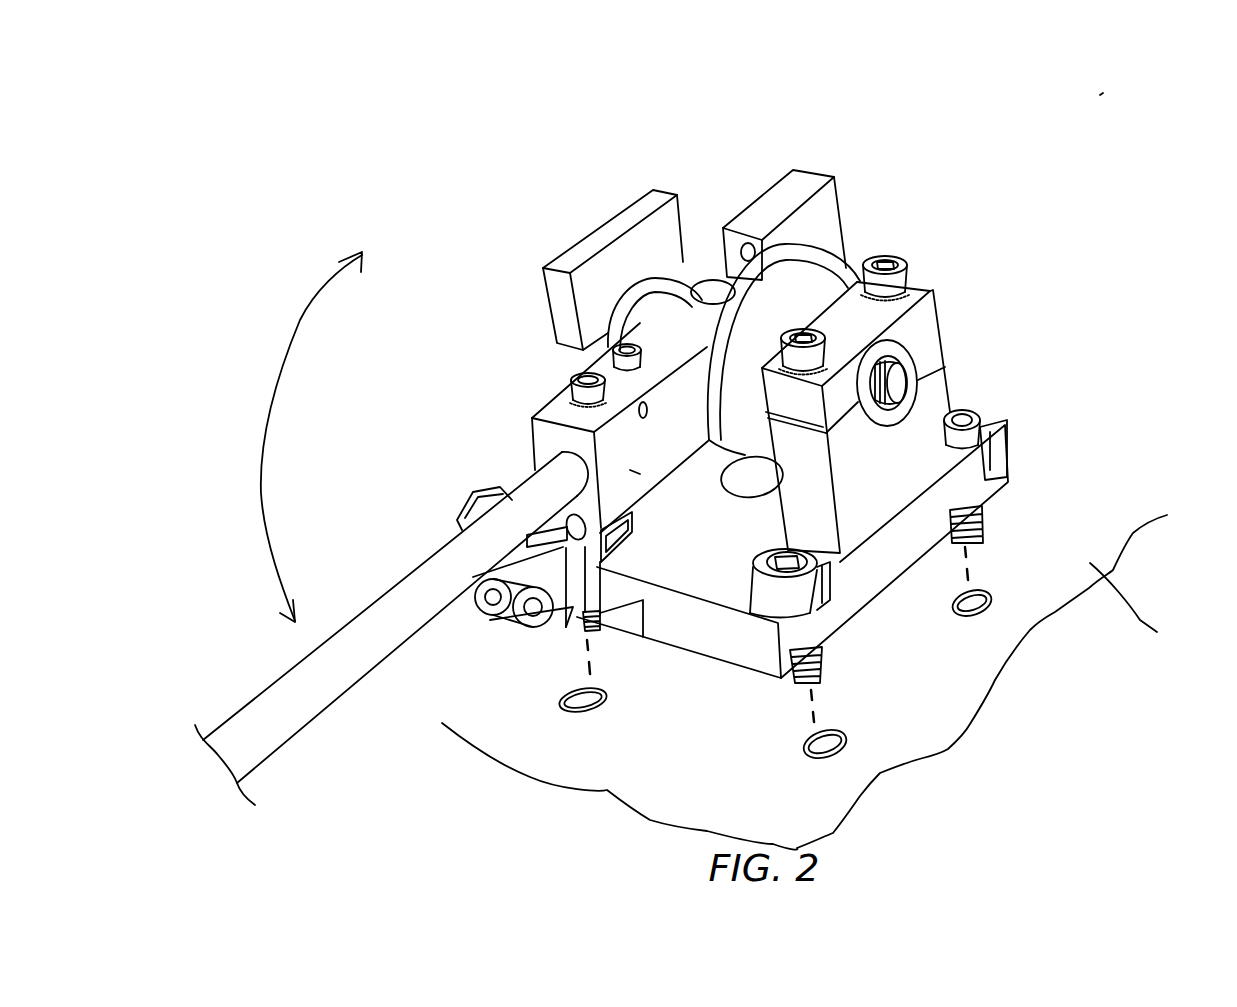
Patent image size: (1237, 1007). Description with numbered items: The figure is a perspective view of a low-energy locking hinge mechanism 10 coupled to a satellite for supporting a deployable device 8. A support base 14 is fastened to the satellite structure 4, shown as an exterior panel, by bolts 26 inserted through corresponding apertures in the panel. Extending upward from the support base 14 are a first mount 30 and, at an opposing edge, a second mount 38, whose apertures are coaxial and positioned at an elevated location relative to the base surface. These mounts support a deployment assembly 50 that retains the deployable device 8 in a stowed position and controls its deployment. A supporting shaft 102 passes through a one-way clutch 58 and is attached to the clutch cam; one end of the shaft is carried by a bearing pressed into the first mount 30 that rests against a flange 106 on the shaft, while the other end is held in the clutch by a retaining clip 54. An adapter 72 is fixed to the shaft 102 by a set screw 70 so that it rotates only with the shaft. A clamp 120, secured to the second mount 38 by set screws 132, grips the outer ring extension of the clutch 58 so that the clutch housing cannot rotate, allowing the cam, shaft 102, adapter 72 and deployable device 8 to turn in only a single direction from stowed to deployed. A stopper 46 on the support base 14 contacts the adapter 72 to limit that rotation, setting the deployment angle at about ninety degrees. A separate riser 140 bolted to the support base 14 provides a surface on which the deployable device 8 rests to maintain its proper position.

The satellite structure 4 is at (814, 682).
The deployable device 8 is at (350, 637).
The low-energy locking hinge mechanism 10 is at (1104, 93).
The support base 14 is at (888, 568).
The bolts 26 is at (968, 415).
The first mount 30 is at (623, 240).
The second mount 38 is at (932, 375).
The stopper 46 is at (817, 220).
The deployment assembly 50 is at (702, 468).
The retaining clip 54 is at (873, 418).
The one-way clutch 58 is at (775, 273).
The set screw 70 is at (615, 352).
The adapter 72 is at (637, 472).
The supporting shaft 102 is at (903, 390).
The flange 106 is at (660, 278).
The clamp 120 is at (920, 317).
The set screws 132 is at (907, 280).
The riser 140 is at (477, 503).